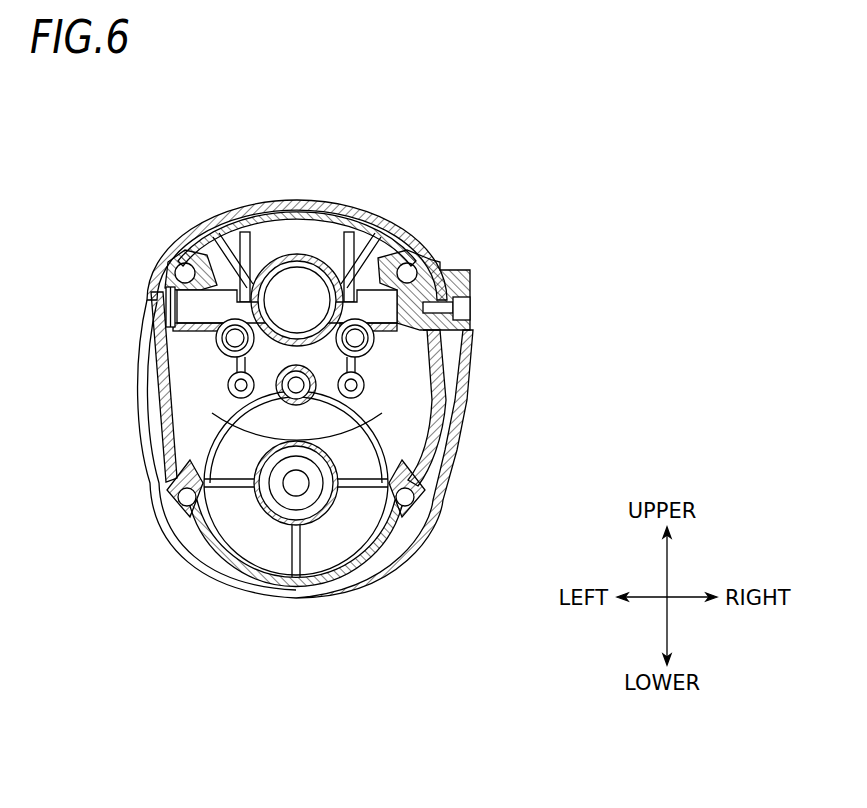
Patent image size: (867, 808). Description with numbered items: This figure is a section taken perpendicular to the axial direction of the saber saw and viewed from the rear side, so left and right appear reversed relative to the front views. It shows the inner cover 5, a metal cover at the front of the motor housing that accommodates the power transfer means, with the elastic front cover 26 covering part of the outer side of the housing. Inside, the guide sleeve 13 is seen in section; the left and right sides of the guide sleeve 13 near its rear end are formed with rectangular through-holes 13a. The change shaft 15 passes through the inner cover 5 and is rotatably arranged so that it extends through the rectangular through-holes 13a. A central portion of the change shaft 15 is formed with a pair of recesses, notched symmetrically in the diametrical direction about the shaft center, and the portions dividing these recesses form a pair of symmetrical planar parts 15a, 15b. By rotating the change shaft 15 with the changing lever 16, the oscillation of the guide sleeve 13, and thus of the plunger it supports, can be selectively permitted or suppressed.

The inner cover 5 is at (333, 208).
The guide sleeve 13 is at (257, 214).
The rectangular through-holes 13a is at (230, 290).
The change shaft 15 is at (190, 250).
The planar part 15a is at (301, 300).
The planar part 15b is at (247, 358).
The changing lever 16 is at (471, 292).
The front cover 26 is at (152, 316).